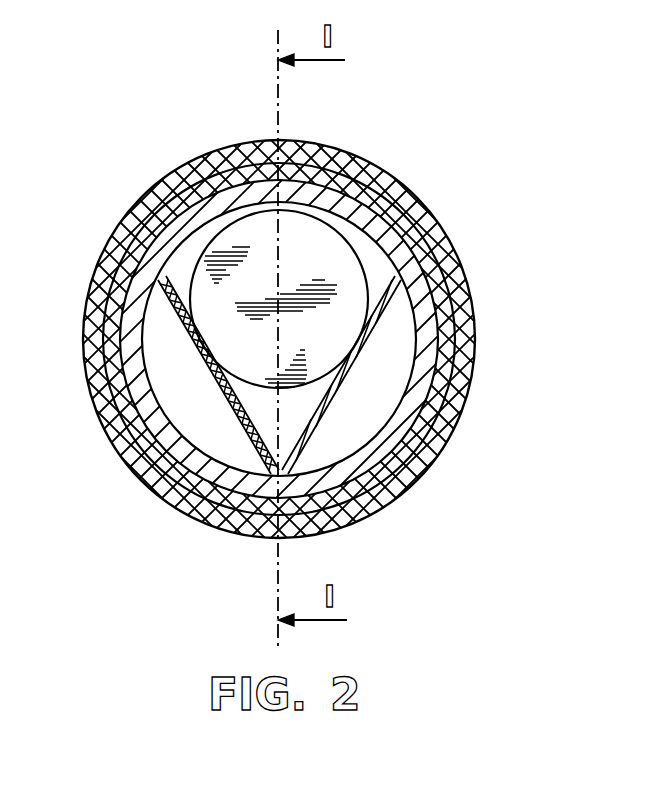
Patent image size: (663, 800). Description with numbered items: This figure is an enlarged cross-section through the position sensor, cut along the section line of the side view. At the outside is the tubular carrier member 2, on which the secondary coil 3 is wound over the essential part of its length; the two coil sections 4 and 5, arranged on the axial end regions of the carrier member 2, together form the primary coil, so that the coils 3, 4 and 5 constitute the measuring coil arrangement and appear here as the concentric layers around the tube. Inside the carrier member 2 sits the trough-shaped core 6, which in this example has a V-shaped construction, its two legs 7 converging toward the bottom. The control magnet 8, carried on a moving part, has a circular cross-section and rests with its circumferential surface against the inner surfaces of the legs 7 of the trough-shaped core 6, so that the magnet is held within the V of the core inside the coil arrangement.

The tubular carrier member 2 is at (380, 232).
The secondary coil 3 is at (445, 272).
The coil section 4 is at (279, 337).
The coil section 5 is at (383, 177).
The trough-shaped core 6 is at (229, 421).
The legs 7 is at (231, 391).
The control magnet 8 is at (245, 248).